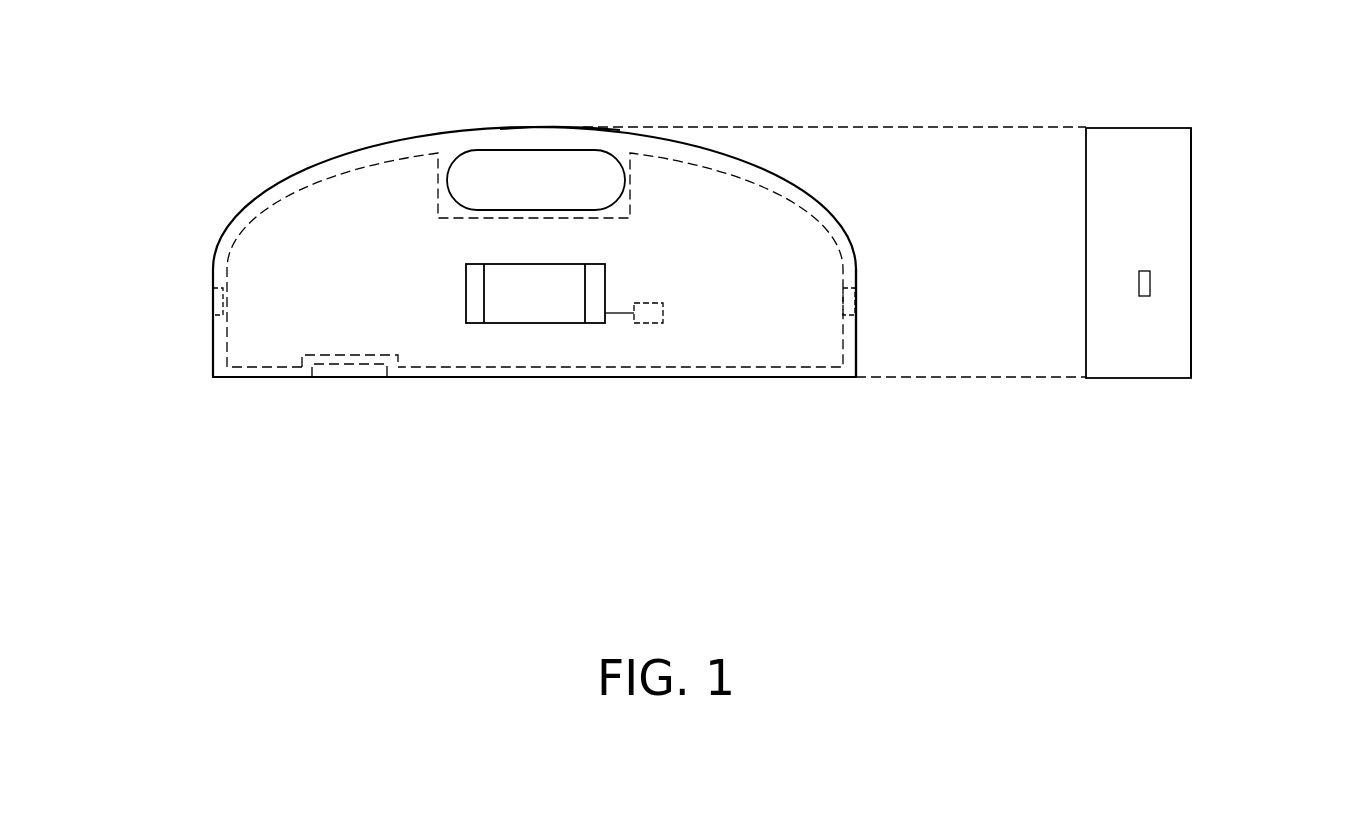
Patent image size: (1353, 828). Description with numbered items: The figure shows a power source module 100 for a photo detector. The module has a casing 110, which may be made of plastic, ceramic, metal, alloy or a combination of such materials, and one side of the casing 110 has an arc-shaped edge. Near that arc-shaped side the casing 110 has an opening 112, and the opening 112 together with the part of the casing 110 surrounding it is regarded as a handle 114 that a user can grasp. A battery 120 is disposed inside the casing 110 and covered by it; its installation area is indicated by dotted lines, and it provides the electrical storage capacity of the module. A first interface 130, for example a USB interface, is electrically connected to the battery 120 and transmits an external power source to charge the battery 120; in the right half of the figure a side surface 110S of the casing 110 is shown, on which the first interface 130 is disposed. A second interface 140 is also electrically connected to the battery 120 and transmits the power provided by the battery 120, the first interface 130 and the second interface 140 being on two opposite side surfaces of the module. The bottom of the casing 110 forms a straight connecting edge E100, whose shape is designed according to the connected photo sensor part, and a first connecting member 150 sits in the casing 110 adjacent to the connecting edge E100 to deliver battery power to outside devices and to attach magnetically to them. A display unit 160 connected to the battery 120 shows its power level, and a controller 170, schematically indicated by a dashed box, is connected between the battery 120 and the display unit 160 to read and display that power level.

The power source module 100 is at (735, 255).
The casing 110 is at (715, 378).
The side surface 110S is at (858, 348).
The opening 112 is at (510, 150).
The handle 114 is at (564, 143).
The battery 120 is at (858, 267).
The first interface 130 is at (858, 322).
The second interface 140 is at (217, 288).
The first connecting member 150 is at (348, 380).
The display unit 160 is at (523, 325).
The controller 170 is at (647, 327).
The connecting edge E100 is at (263, 378).